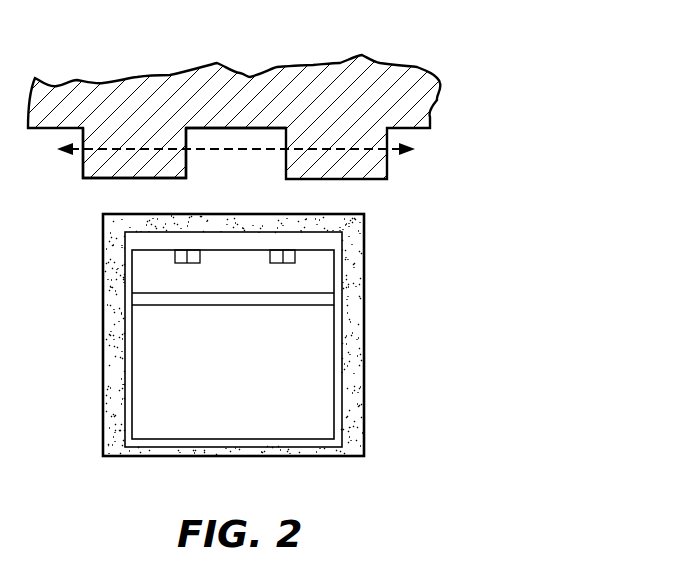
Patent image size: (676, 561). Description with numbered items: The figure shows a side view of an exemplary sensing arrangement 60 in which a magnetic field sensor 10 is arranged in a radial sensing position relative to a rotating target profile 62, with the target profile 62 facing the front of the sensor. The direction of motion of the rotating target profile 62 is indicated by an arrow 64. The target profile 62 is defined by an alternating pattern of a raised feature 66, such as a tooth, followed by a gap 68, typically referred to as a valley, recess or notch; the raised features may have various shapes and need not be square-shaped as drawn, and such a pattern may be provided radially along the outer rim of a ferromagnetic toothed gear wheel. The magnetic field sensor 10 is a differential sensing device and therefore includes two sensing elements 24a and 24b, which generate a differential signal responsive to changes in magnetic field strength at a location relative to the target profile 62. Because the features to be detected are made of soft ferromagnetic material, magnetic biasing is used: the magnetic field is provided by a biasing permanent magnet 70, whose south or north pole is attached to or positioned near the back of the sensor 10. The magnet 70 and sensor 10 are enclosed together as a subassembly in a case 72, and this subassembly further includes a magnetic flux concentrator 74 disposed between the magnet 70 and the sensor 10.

The sensing arrangement 60 is at (507, 57).
The rotating target profile 62 is at (433, 107).
The arrow 64 is at (393, 153).
The raised feature 66 is at (89, 180).
The gap 68 is at (231, 151).
The sensing element 24a is at (182, 250).
The sensing element 24b is at (286, 250).
The magnetic field sensor 10 is at (305, 273).
The magnetic flux concentrator 74 is at (305, 298).
The biasing permanent magnet 70 is at (305, 393).
The case 72 is at (353, 436).